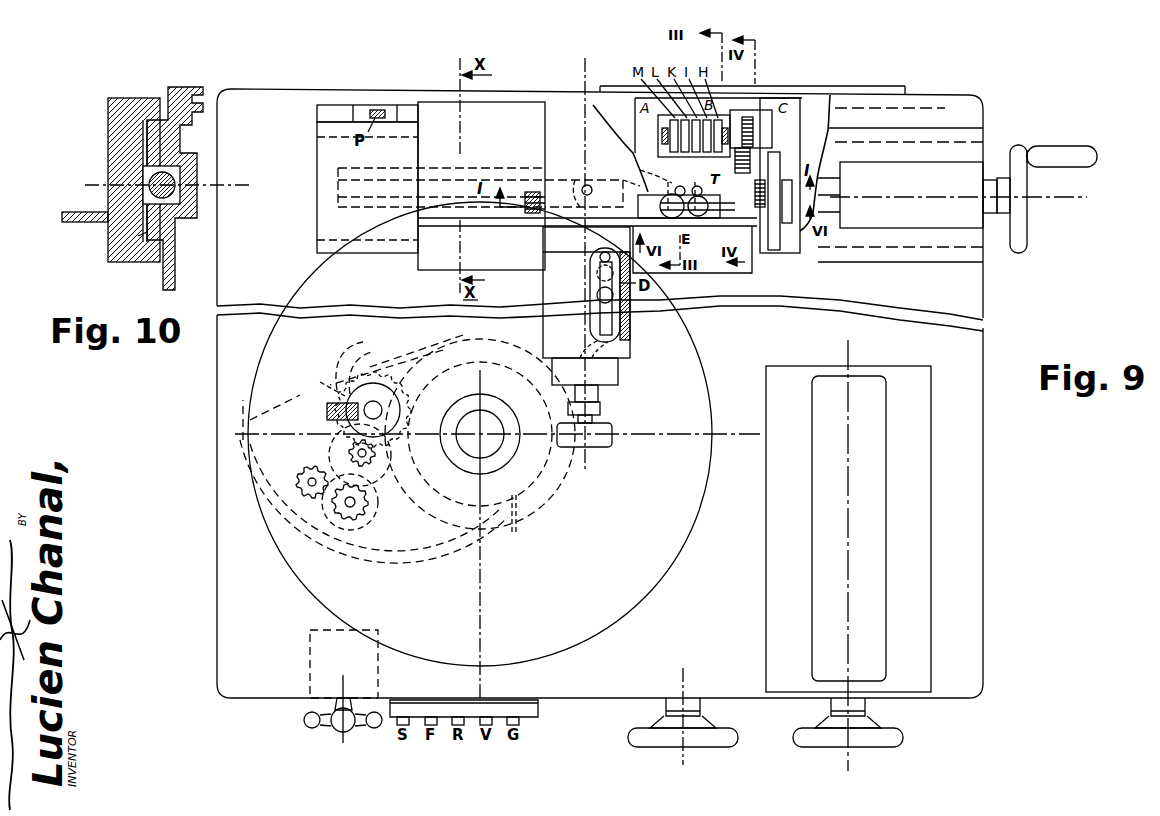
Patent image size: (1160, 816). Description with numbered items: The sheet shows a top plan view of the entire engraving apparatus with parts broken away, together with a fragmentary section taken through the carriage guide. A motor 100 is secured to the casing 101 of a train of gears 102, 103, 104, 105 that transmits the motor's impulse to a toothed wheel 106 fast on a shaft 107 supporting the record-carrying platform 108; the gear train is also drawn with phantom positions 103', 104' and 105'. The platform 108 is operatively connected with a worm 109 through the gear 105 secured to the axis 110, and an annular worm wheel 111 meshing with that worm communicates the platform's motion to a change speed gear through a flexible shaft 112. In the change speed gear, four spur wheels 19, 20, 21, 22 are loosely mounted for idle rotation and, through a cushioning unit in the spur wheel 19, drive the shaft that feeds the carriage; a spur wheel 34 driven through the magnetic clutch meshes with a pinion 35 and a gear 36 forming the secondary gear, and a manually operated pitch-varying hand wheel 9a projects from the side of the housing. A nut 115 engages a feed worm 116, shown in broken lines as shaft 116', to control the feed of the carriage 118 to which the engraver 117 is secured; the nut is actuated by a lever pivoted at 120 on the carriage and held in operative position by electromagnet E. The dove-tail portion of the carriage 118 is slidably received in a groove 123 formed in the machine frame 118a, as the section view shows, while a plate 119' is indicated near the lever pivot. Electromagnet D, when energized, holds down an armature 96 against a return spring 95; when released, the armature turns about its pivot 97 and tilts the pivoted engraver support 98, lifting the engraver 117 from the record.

In FIG. 9, the pitch-varying hand wheel 9a is at (721, 738).
In FIG. 9, the spur wheel 19 is at (703, 187).
In FIG. 9, the spur wheel 20 is at (668, 187).
In FIG. 9, the spur wheel 21 is at (654, 169).
In FIG. 9, the spur wheel 22 is at (626, 175).
In FIG. 9, the spur wheel 34 is at (742, 153).
In FIG. 9, the pinion 35 is at (760, 180).
In FIG. 9, the gear 36 is at (750, 120).
In FIG. 9, the return spring 95 is at (598, 257).
In FIG. 9, the armature 96 is at (595, 303).
In FIG. 9, the pivot 97 is at (598, 320).
In FIG. 9, the engraver support 98 is at (590, 352).
In FIG. 9, the motor 100 is at (293, 567).
In FIG. 9, the casing 101 is at (407, 545).
In FIG. 9, the gear 102 is at (292, 482).
In FIG. 9, the gear 103 is at (373, 502).
In FIG. 9, the gear 103' is at (309, 520).
In FIG. 9, the gear 104 is at (388, 455).
In FIG. 9, the pinion 104' is at (333, 450).
In FIG. 9, the gear 105 is at (480, 434).
In FIG. 9, the gear 105' is at (396, 360).
In FIG. 9, the toothed wheel 106 is at (480, 444).
In FIG. 9, the shaft 107 is at (493, 423).
In FIG. 9, the record-carrying platform 108 is at (623, 595).
In FIG. 9, the worm 109 is at (337, 385).
In FIG. 9, the axis 110 is at (400, 410).
In FIG. 9, the annular worm wheel 111 is at (327, 408).
In FIG. 9, the flexible shaft 112 is at (364, 344).
In FIG. 9, the nut 115 is at (587, 186).
In FIG. 10, the feed worm 116 is at (159, 173).
In FIG. 9, the shaft 116' is at (480, 199).
In FIG. 9, the engraver 117 is at (612, 430).
In FIG. 10, the carriage 118 is at (120, 265).
In FIG. 9, the carriage 118 is at (418, 262).
In FIG. 10, the machine frame 118a is at (153, 242).
In FIG. 9, the machine frame 118a is at (330, 255).
In FIG. 9, the plate 119' is at (586, 292).
In FIG. 9, the pivot 120 is at (533, 192).
In FIG. 10, the groove 123 is at (138, 237).